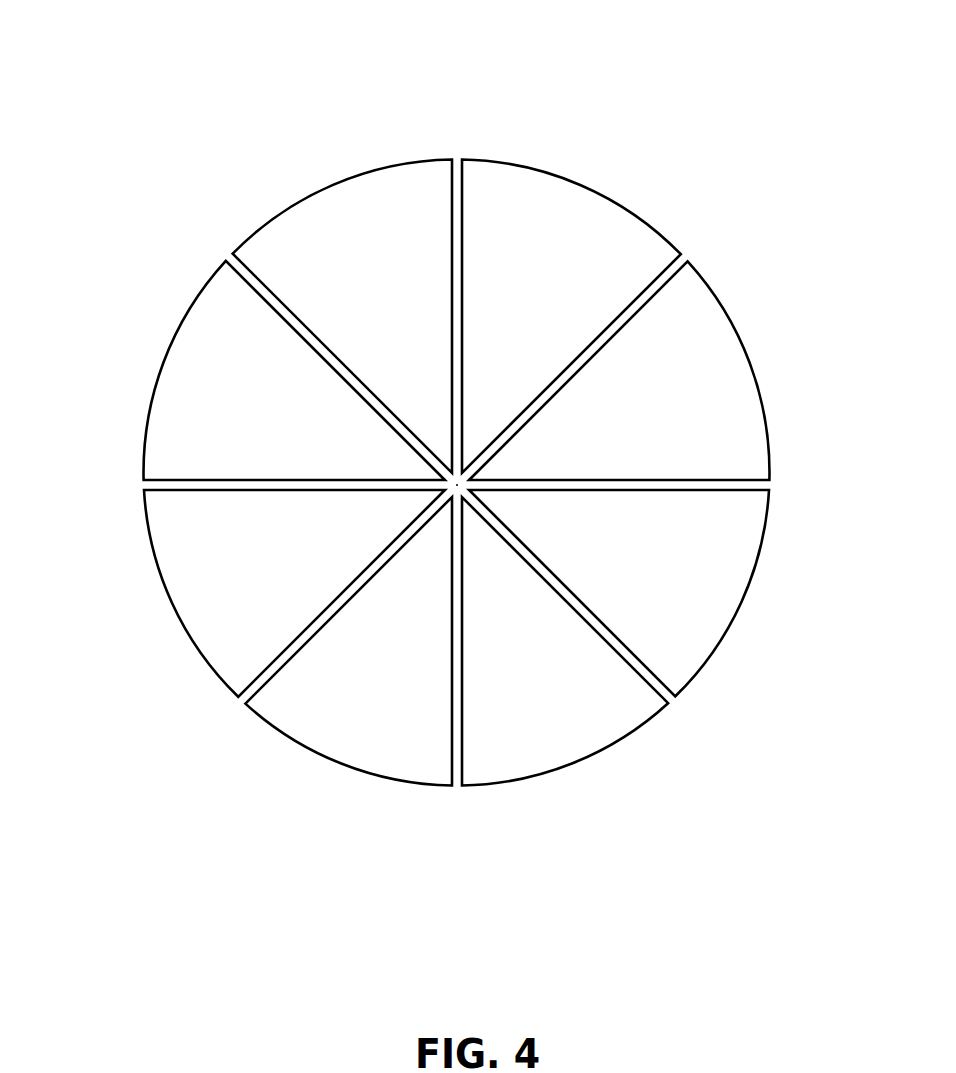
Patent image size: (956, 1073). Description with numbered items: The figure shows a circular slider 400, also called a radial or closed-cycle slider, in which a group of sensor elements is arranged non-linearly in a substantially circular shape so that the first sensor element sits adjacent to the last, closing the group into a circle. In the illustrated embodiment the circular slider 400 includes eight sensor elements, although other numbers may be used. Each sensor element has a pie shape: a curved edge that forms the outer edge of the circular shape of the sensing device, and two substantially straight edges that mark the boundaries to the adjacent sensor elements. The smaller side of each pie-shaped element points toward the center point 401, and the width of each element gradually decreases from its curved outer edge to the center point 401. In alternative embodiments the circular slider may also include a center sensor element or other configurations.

The circular slider 400 is at (249, 82).
The center point 401 is at (461, 490).